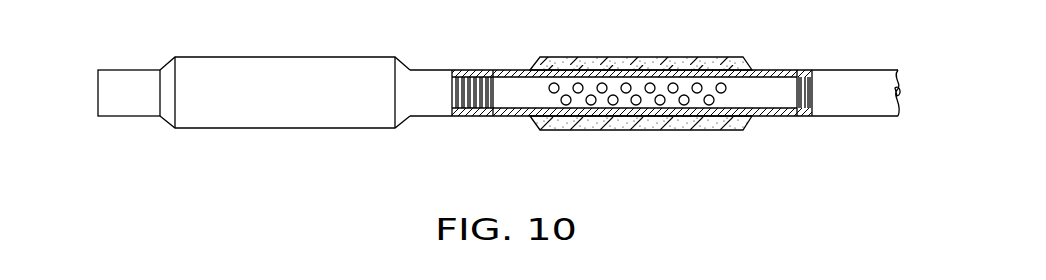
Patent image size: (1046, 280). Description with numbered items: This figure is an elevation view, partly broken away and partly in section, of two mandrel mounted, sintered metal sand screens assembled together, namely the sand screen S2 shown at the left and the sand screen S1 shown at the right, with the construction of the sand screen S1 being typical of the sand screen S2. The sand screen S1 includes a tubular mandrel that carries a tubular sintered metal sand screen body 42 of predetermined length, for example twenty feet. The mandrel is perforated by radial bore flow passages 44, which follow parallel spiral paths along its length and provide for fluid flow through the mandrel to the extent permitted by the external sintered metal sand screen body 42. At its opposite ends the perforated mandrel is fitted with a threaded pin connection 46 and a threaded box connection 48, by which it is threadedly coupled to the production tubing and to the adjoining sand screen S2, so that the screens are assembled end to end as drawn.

The sand screen S2 is at (263, 57).
The sand screen S1 is at (658, 58).
The tubular sand screen body 42 is at (690, 123).
The radial bore flow passages 44 is at (728, 85).
The threaded pin connection 46 is at (472, 116).
The threaded box connection 48 is at (479, 70).